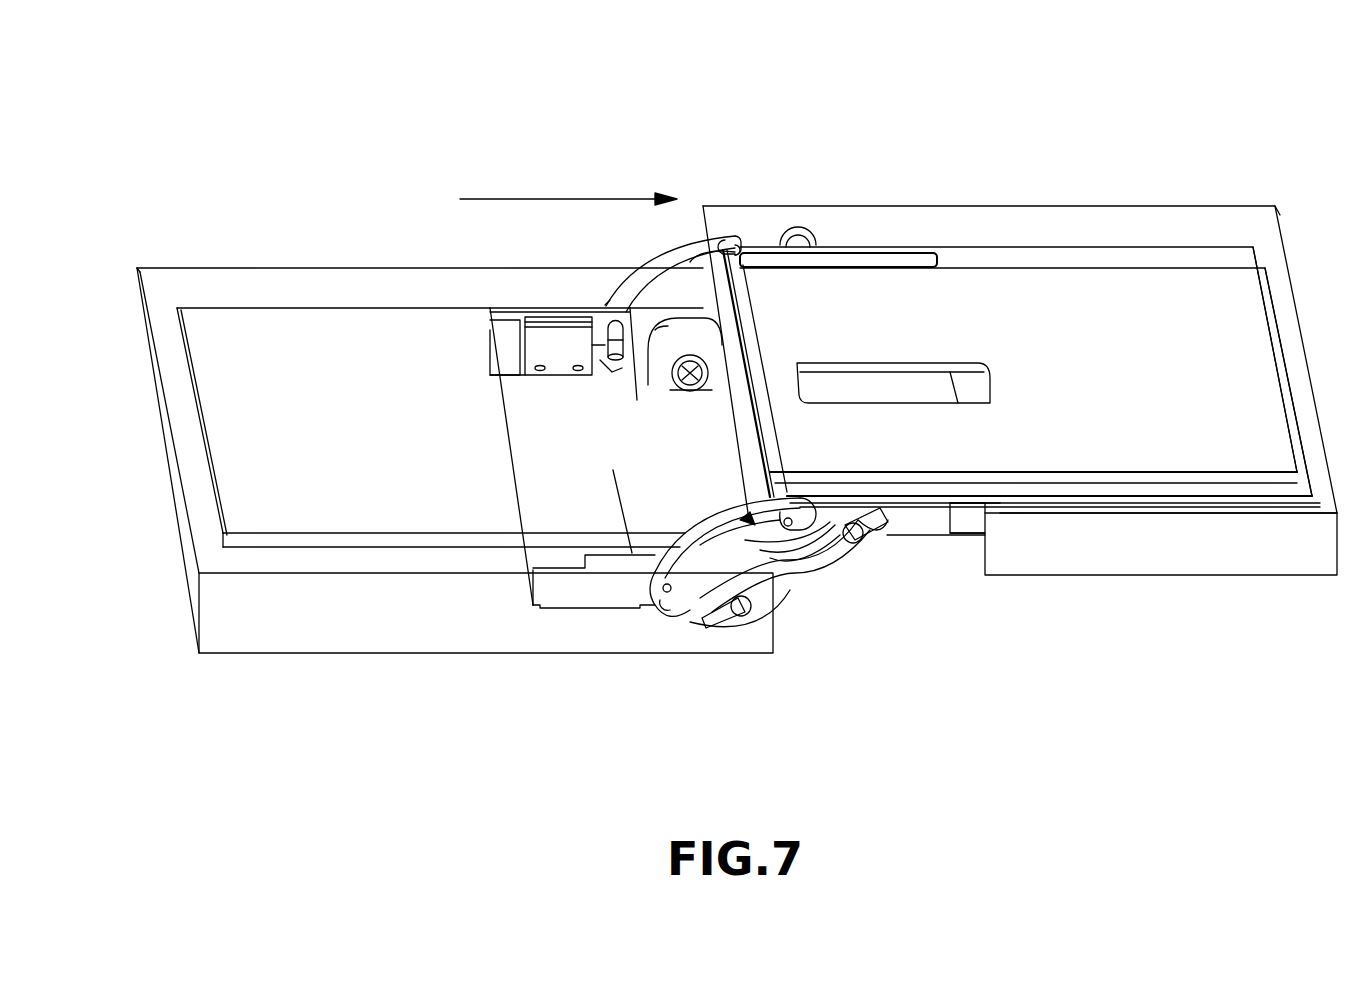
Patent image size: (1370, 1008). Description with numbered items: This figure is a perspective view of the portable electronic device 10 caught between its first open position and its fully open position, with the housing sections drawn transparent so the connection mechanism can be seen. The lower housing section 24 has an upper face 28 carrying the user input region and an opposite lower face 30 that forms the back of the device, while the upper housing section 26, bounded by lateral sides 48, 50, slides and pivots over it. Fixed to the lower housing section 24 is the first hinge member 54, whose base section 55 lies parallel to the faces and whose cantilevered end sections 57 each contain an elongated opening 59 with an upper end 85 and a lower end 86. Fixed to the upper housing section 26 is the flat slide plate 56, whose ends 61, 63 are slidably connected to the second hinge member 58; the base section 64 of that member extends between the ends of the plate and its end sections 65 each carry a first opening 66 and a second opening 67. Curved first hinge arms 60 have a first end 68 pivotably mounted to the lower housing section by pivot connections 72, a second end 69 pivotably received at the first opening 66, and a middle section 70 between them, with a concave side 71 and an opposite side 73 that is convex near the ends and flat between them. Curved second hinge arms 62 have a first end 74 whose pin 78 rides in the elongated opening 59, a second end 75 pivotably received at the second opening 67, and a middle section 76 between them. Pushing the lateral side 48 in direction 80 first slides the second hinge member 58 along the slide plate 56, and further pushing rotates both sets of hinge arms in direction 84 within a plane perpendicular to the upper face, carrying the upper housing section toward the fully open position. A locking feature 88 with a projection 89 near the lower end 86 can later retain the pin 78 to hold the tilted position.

The device 10 is at (343, 172).
The lower housing section 24 is at (178, 278).
The upper housing section 26 is at (1268, 220).
The upper face 28 is at (178, 333).
The lower face 30 is at (272, 655).
The lateral side 48 is at (703, 228).
The lateral side 50 is at (1338, 535).
The first hinge member 54 is at (545, 560).
The base section 55 is at (528, 500).
The slide plate 56 is at (1248, 343).
The end sections 57 is at (488, 330).
The second hinge member 58 is at (990, 502).
The elongated opening 59 is at (612, 360).
The first hinge arms 60 is at (734, 612).
The end 61 is at (1132, 268).
The second hinge arms 62 is at (643, 263).
The end 63 is at (1188, 500).
The base section 64 is at (964, 518).
The end sections 65 is at (895, 262).
The first opening 66 is at (797, 235).
The second opening 67 is at (742, 245).
The first end 68 is at (705, 580).
The second end 69 is at (872, 522).
The middle section 70 is at (795, 552).
The side 71 is at (812, 555).
The pivot connections 72 is at (686, 387).
The side 73 is at (860, 540).
The first end 74 is at (608, 303).
The second end 75 is at (735, 232).
The middle section 76 is at (687, 243).
The pin 78 is at (560, 352).
The direction 80 is at (548, 198).
The direction 84 is at (680, 518).
The upper end 85 is at (621, 323).
The lower end 86 is at (612, 387).
The locking feature 88 is at (500, 380).
The projection 89 is at (610, 357).